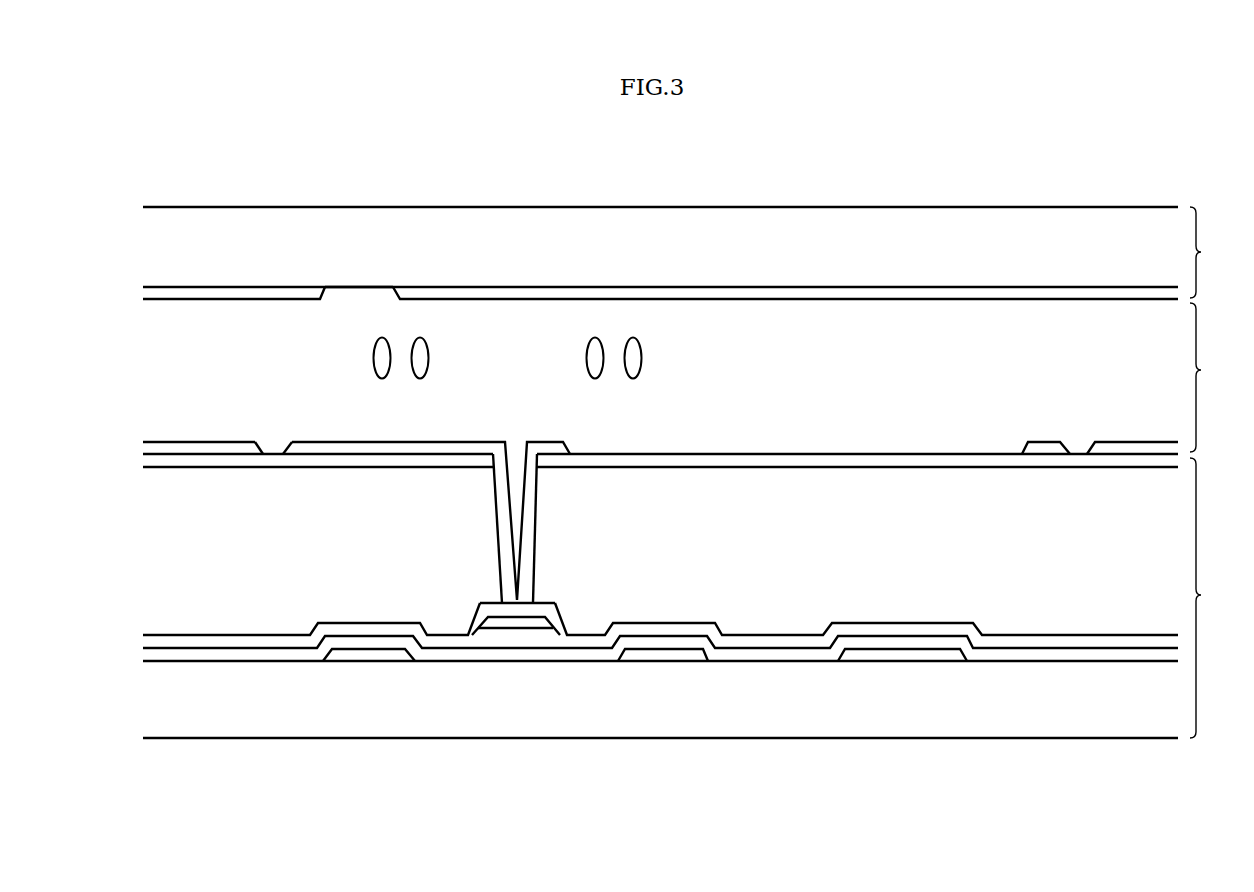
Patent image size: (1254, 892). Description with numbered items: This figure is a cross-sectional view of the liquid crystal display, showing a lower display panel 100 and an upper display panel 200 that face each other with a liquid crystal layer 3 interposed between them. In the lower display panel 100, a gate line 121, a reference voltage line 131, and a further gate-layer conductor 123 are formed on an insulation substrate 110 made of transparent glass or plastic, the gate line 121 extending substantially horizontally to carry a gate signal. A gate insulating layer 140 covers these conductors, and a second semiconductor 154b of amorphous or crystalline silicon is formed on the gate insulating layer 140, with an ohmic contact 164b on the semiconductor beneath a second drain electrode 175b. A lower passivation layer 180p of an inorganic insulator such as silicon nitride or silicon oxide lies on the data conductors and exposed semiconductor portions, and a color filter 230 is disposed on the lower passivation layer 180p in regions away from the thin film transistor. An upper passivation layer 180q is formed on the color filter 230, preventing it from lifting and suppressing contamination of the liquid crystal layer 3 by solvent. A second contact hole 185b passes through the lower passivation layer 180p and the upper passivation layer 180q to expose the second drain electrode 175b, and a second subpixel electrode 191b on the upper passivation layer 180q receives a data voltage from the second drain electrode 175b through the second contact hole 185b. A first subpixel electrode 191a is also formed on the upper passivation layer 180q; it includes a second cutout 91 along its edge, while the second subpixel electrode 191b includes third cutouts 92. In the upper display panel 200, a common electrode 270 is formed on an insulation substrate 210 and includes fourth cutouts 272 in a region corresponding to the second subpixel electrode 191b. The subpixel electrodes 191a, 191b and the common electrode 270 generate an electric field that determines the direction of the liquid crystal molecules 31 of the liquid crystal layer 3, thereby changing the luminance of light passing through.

The insulation substrate 210 is at (757, 232).
The common electrode 270 is at (1010, 292).
The fourth cutout 272 is at (324, 288).
The liquid crystal molecules 31 is at (428, 357).
The second subpixel electrode 191b is at (188, 448).
The third cutout 92 is at (267, 448).
The upper passivation layer 180q is at (322, 462).
The second contact hole 185b is at (537, 508).
The color filter 230 is at (872, 483).
The second cutout 91 is at (1070, 450).
The first subpixel electrode 191a is at (1142, 448).
The lower passivation layer 180p is at (1067, 642).
The second drain electrode 175b is at (528, 622).
The second semiconductor 154b is at (492, 636).
The ohmic contact 164b is at (512, 631).
The gate insulating layer 140 is at (778, 652).
The gate electrode 123 is at (368, 653).
The gate line 121 is at (683, 653).
The reference voltage line 131 is at (900, 653).
The insulation substrate 110 is at (630, 715).
The upper display panel 200 is at (1218, 252).
The liquid crystal layer 3 is at (1208, 377).
The lower display panel 100 is at (1219, 598).